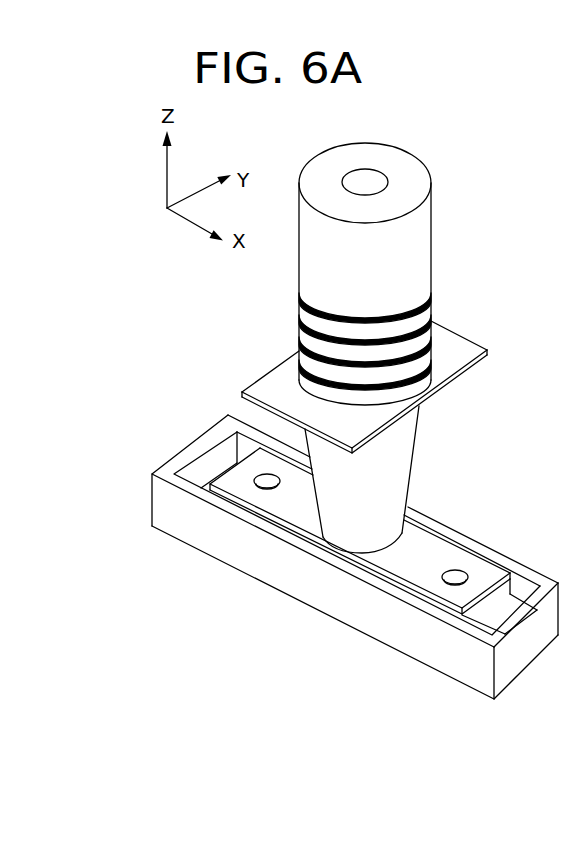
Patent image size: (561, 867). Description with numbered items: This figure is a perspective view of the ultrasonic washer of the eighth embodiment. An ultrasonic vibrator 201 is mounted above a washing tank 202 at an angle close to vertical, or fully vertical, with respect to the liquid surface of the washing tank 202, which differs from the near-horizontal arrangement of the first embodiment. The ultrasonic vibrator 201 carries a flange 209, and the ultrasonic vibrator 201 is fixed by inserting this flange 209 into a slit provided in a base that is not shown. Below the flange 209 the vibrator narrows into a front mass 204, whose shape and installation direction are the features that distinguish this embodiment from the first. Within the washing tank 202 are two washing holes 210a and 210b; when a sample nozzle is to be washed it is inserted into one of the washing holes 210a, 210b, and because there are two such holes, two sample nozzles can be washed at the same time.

The ultrasonic vibrator 201 is at (432, 194).
The flange 209 is at (456, 330).
The front mass 204 is at (413, 456).
The washing tank 202 is at (460, 672).
The washing hole 210a is at (460, 569).
The washing hole 210b is at (266, 490).